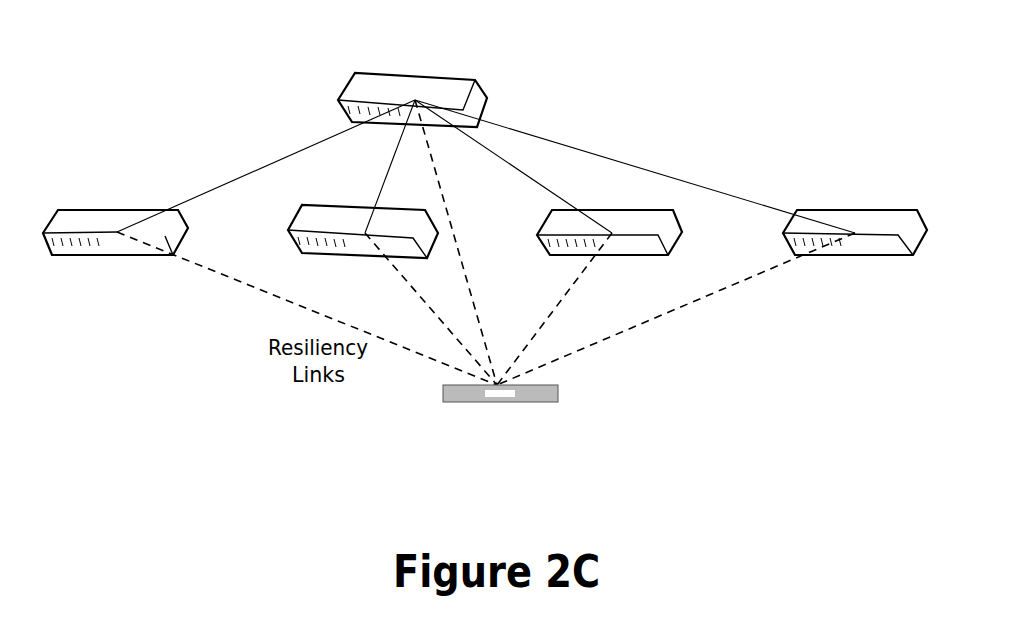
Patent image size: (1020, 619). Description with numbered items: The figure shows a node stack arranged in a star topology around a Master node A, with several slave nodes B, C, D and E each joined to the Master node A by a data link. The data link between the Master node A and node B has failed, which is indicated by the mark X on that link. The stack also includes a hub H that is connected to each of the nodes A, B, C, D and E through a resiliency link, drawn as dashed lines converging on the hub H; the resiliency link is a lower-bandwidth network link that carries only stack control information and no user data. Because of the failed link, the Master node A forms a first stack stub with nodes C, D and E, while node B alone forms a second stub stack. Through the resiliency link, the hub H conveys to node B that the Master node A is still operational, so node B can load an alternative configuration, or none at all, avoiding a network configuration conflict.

The Master node A is at (445, 75).
The slave node B is at (115, 208).
The slave node C is at (363, 212).
The slave node D is at (609, 208).
The slave node E is at (855, 209).
The link X between master A and node B X is at (266, 166).
The hub H is at (695, 367).